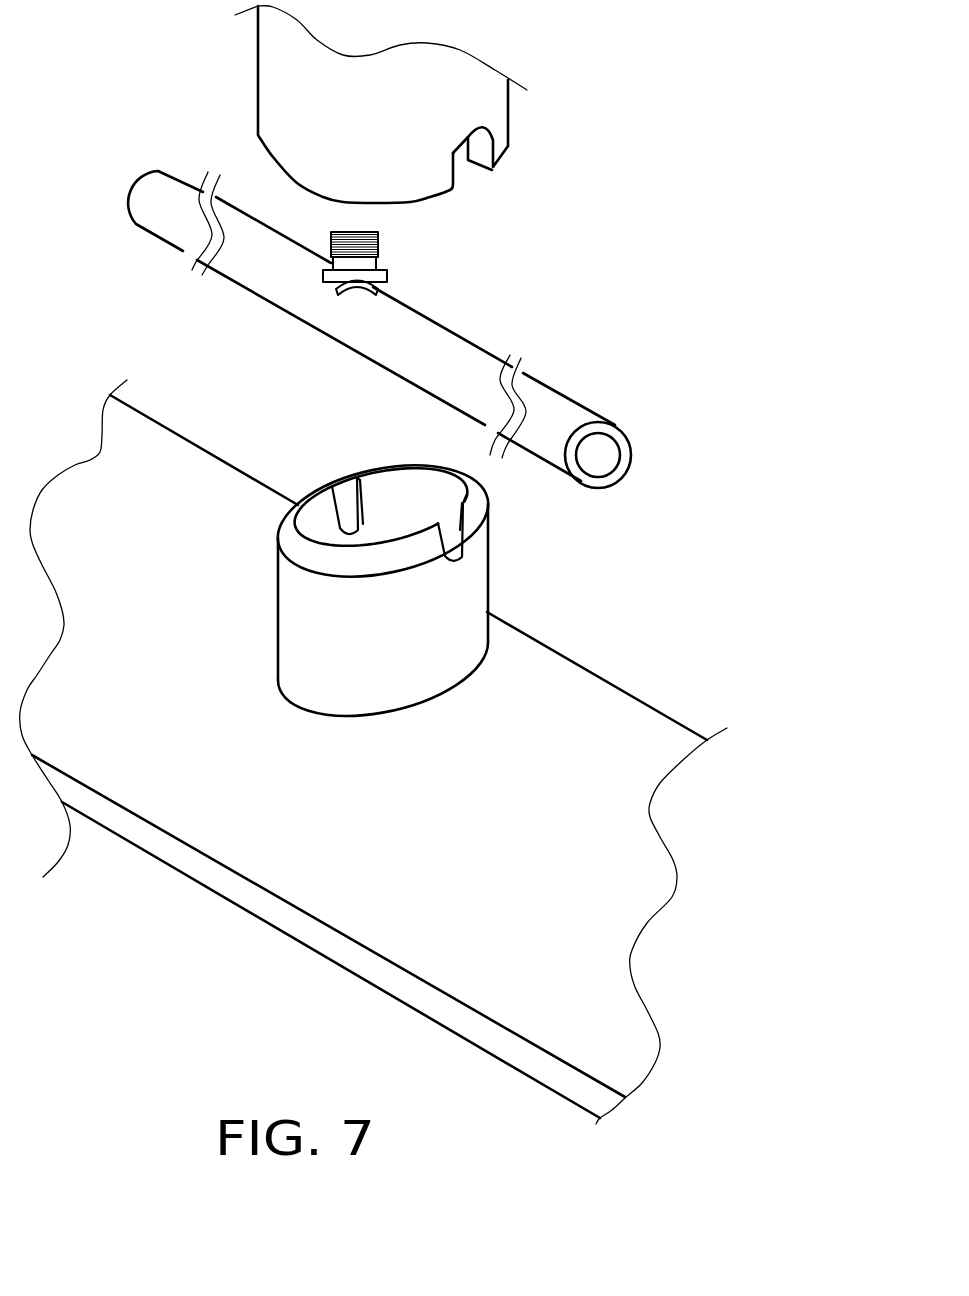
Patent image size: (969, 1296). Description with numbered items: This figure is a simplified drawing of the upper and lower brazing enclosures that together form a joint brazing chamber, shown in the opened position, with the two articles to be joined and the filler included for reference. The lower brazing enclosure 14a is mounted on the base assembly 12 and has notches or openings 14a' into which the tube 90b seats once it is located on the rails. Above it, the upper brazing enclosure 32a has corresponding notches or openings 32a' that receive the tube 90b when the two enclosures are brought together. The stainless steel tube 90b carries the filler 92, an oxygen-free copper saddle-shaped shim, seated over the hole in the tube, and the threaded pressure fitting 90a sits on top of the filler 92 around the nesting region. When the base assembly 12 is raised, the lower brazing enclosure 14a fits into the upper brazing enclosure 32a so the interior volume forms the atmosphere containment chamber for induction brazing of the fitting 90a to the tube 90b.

The base assembly 12 is at (496, 809).
The lower brazing enclosure 14a is at (383, 582).
The notches or openings 14a' is at (428, 484).
The upper brazing enclosure 32a is at (381, 104).
The notches or openings 32a' is at (544, 163).
The pressure fitting 90a is at (377, 261).
The tube 90b is at (455, 352).
The filler 92 is at (376, 287).